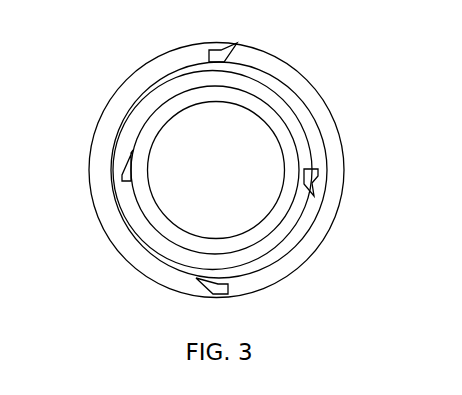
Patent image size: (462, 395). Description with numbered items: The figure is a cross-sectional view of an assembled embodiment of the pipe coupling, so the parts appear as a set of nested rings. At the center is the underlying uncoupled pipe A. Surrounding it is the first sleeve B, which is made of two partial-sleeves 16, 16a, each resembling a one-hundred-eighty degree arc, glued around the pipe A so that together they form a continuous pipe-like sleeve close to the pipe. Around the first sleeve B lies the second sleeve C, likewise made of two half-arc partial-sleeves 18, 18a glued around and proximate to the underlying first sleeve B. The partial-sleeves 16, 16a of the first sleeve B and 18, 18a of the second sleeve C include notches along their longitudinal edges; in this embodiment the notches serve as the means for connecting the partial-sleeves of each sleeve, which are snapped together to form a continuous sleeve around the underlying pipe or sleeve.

The partial-sleeve 18 is at (138, 78).
The partial-sleeve 18a is at (330, 212).
The partial-sleeve 16 is at (134, 220).
The partial-sleeve 16a is at (298, 99).
The pipe A is at (300, 134).
The first sleeve B is at (130, 127).
The second sleeve C is at (333, 188).